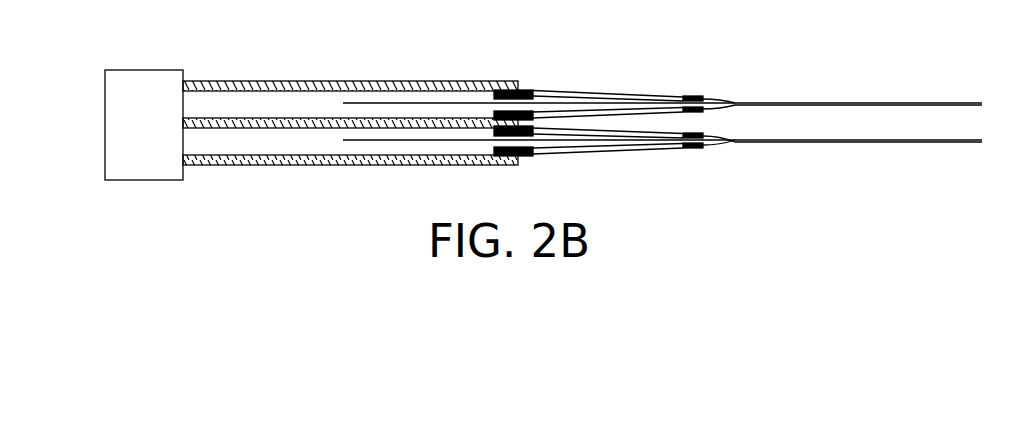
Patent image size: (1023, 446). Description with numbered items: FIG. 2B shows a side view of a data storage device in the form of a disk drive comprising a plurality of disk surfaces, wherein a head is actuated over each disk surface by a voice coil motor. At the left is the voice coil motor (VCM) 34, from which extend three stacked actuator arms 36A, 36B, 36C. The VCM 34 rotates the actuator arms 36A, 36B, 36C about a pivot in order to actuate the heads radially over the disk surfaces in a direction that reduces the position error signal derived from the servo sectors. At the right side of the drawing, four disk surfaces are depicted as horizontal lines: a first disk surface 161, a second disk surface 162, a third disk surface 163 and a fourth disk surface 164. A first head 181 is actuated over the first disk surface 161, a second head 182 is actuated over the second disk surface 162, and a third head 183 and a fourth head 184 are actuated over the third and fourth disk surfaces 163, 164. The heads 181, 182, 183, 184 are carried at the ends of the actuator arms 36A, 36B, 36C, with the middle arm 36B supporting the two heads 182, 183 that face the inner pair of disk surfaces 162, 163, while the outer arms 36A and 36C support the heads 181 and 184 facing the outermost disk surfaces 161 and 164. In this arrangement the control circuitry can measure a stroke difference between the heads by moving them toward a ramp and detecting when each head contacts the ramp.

The voice coil motor (VCM) 34 is at (105, 122).
The actuator arm 36A is at (242, 81).
The actuator arm 36B is at (285, 118).
The actuator arm 36C is at (325, 155).
The first disk surface 161 is at (862, 103).
The second disk surface 162 is at (903, 105).
The disk surface 163 is at (908, 140).
The disk surface 164 is at (913, 142).
The first head 181 is at (704, 97).
The second head 182 is at (712, 106).
The head 183 is at (710, 138).
The head 184 is at (704, 147).